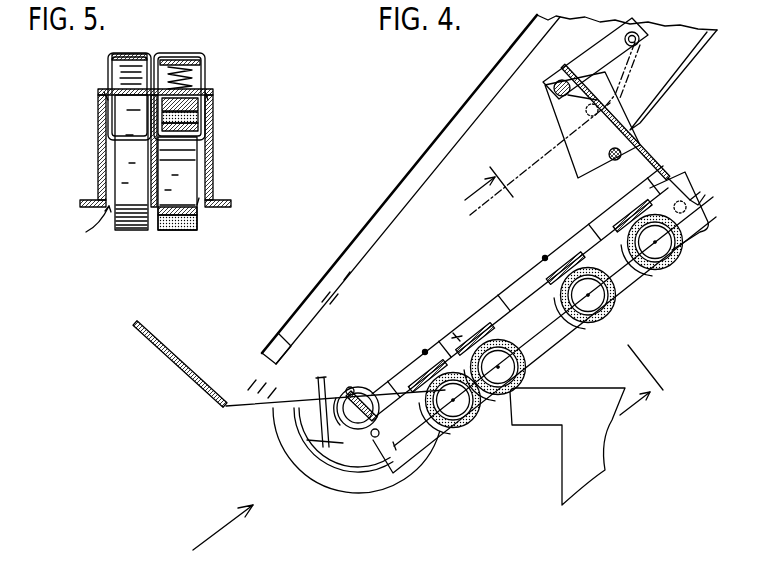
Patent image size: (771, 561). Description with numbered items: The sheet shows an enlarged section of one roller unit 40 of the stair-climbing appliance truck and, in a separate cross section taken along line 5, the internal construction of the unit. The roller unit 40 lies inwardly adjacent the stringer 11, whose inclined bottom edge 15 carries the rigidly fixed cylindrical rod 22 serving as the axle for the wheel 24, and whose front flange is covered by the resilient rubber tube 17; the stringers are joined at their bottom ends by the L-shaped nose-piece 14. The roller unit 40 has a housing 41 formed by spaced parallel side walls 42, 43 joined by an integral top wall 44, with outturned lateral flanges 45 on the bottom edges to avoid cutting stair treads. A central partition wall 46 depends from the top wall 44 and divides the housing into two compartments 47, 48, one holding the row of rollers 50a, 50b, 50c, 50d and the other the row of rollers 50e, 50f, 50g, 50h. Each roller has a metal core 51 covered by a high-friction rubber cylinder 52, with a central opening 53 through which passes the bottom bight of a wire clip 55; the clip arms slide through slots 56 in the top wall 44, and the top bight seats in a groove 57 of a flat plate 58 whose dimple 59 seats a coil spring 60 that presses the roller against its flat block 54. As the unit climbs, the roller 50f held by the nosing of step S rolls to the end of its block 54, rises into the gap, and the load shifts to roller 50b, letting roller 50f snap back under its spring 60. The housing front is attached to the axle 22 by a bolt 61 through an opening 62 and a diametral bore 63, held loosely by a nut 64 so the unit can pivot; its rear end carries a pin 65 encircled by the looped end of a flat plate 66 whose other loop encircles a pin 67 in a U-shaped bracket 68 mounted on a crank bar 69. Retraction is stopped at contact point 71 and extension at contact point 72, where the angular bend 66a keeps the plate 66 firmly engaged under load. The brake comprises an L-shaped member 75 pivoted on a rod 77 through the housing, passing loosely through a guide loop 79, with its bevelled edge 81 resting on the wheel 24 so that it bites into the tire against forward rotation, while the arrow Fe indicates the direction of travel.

In FIG. 4, the stringer 11 is at (705, 45).
In FIG. 4, the nose-piece 14 is at (150, 340).
In FIG. 4, the inclined bottom edge 15 is at (228, 408).
In FIG. 4, the tube 17 is at (334, 263).
In FIG. 4, the rod 22 is at (362, 382).
In FIG. 4, the wheel 24 is at (363, 493).
In FIG. 5, the roller unit 40 is at (148, 147).
In FIG. 4, the roller unit 40 is at (565, 265).
In FIG. 5, the housing 41 is at (98, 92).
In FIG. 4, the housing 41 is at (655, 185).
In FIG. 5, the side wall 42 is at (98, 152).
In FIG. 5, the side wall 43 is at (213, 159).
In FIG. 5, the top wall 44 is at (91, 82).
In FIG. 5, the lateral flange 45 is at (80, 203).
In FIG. 5, the partition wall 46 is at (154, 210).
In FIG. 4, the partition wall 46 is at (393, 475).
In FIG. 5, the roller compartment 47 is at (92, 228).
In FIG. 5, the roller compartment 48 is at (200, 206).
In FIG. 4, the roller 50a is at (445, 428).
In FIG. 4, the roller 50b is at (490, 400).
In FIG. 4, the roller 50c is at (572, 325).
In FIG. 5, the roller 50d is at (124, 190).
In FIG. 4, the roller 50d is at (636, 285).
In FIG. 4, the roller 50e is at (470, 430).
In FIG. 4, the roller 50f is at (530, 375).
In FIG. 5, the roller 50g is at (198, 225).
In FIG. 4, the roller 50g is at (580, 312).
In FIG. 4, the roller 50h is at (668, 268).
In FIG. 5, the metal core 51 is at (208, 214).
In FIG. 4, the metal core 51 is at (683, 242).
In FIG. 5, the cylinder 52 is at (132, 231).
In FIG. 4, the cylinder 52 is at (680, 256).
In FIG. 5, the central opening 53 is at (175, 205).
In FIG. 4, the central opening 53 is at (660, 270).
In FIG. 5, the block 54 is at (198, 104).
In FIG. 4, the block 54 is at (500, 300).
In FIG. 5, the clip 55 is at (200, 86).
In FIG. 4, the clip 55 is at (547, 262).
In FIG. 5, the slot 56 is at (110, 96).
In FIG. 4, the groove 57 is at (424, 350).
In FIG. 4, the plate 58 is at (452, 336).
In FIG. 5, the projection 59 is at (134, 56).
In FIG. 5, the coil spring 60 is at (122, 74).
In FIG. 4, the bolt 61 is at (340, 392).
In FIG. 4, the opening 62 is at (368, 392).
In FIG. 4, the diametral bore 63 is at (370, 432).
In FIG. 4, the nut 64 is at (349, 387).
In FIG. 4, the pin 65 is at (700, 176).
In FIG. 4, the flat plate 66 is at (630, 68).
In FIG. 4, the angular bend 66a is at (697, 190).
In FIG. 4, the pin 67 is at (640, 39).
In FIG. 4, the bracket 68 is at (588, 50).
In FIG. 4, the crank bar 69 is at (561, 79).
In FIG. 4, the contact point 71 is at (567, 97).
In FIG. 4, the contact point 72 is at (660, 172).
In FIG. 4, the L-shaped member 75 is at (340, 441).
In FIG. 4, the rod 77 is at (385, 437).
In FIG. 4, the guide loop 79 is at (330, 412).
In FIG. 4, the bevelled edge 81 is at (300, 443).
In FIG. 4, the section line 5- 5 is at (560, 296).
In FIG. 4, the step S is at (592, 455).
In FIG. 4, the feed direction Fe is at (220, 527).